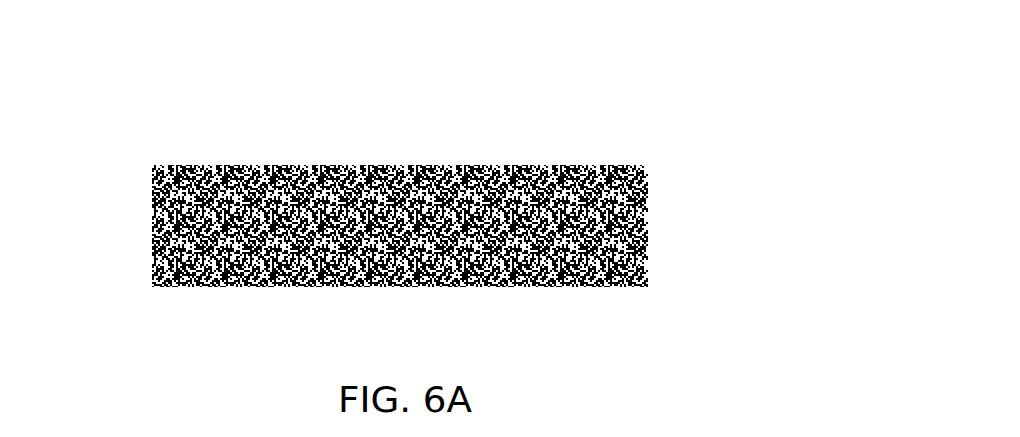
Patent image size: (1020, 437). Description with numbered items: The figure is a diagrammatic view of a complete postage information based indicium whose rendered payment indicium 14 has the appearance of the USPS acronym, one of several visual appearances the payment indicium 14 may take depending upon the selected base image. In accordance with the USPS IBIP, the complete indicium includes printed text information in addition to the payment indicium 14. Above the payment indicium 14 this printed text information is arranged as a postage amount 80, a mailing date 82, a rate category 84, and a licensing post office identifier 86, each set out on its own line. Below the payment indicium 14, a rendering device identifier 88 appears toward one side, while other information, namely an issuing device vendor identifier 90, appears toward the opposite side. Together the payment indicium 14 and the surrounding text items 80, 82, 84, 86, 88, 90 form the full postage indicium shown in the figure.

The payment indicium 14 is at (150, 210).
The postage amount 80 is at (657, 25).
The mailing date 82 is at (657, 62).
The rate category 84 is at (657, 108).
The licensing post office identifier 86 is at (657, 140).
The rendering device identifier 88 is at (660, 302).
The issuing device vendor identifier 90 is at (148, 307).